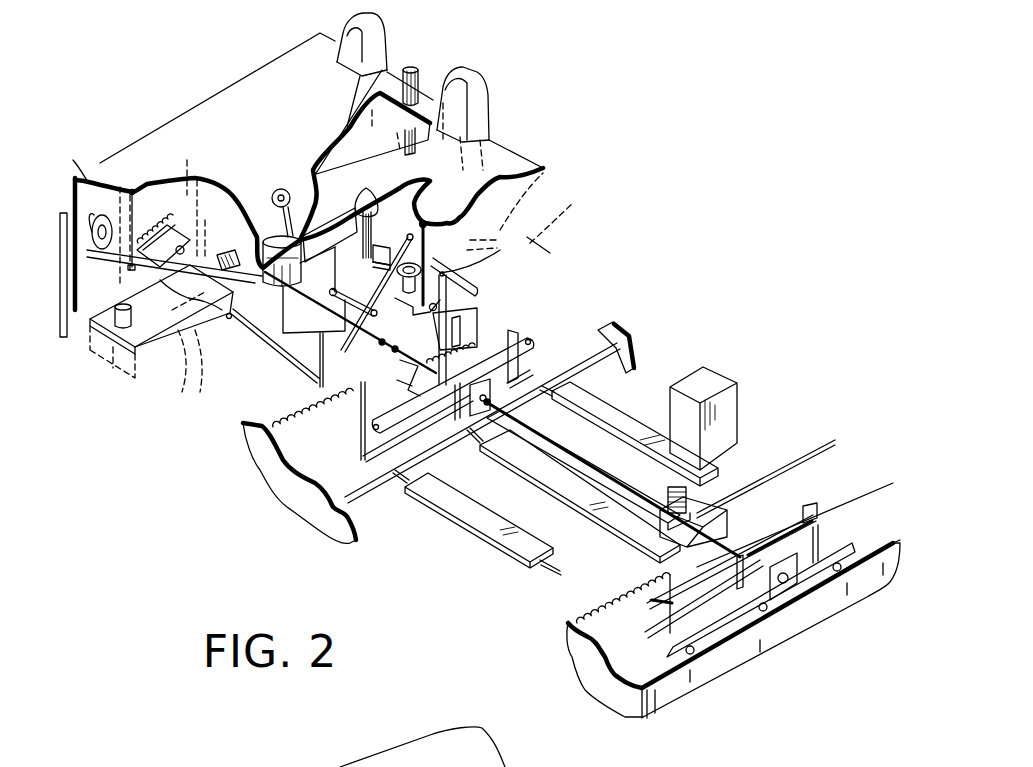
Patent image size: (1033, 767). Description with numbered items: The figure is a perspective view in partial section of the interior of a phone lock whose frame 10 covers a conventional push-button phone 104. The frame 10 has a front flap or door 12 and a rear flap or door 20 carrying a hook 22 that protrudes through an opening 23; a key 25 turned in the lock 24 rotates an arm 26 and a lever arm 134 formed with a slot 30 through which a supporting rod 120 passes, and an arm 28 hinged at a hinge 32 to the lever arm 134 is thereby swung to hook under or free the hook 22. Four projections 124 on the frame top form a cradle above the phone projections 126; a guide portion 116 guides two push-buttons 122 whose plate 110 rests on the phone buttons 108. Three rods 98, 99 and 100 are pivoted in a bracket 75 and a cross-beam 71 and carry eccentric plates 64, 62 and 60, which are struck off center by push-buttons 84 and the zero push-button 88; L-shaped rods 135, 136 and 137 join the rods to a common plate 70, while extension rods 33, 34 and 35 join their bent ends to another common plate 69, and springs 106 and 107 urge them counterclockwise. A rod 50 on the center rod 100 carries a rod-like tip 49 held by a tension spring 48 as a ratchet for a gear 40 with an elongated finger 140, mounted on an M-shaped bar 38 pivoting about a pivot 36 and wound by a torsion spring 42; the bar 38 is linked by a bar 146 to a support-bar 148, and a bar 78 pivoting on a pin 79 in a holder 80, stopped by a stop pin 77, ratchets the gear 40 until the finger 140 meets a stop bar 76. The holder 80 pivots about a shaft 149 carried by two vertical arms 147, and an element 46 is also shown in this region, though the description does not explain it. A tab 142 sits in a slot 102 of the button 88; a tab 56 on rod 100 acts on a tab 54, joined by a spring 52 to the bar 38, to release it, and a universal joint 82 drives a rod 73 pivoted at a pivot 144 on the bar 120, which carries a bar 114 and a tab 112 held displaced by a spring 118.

The frame 10 is at (218, 95).
The front flap or door 12 is at (582, 450).
The rear flap or door 20 is at (60, 237).
The hook 22 is at (118, 185).
The opening 23 is at (65, 161).
The lock 24 is at (275, 238).
The key 25 is at (281, 190).
The arm 26 is at (283, 310).
The arm 28 is at (90, 258).
The slot 30 is at (130, 290).
The hinge 32 is at (229, 320).
The extension rod 33 is at (365, 403).
The extension rod 34 is at (493, 393).
The extension rod 35 is at (519, 335).
The pivot 36 is at (368, 312).
The M-shaped bar 38 is at (430, 200).
The gear 40 is at (446, 262).
The torsion spring 42 is at (397, 296).
The rod 46 is at (448, 305).
The tension spring 48 is at (428, 310).
The rod-like tip 49 is at (500, 246).
The rod 50 is at (457, 331).
The spring 52 is at (476, 350).
The tab 54 is at (408, 368).
The tab 56 is at (391, 387).
The plate 60 is at (540, 475).
The plate 62 is at (600, 408).
The plate 64 is at (460, 513).
The common plate 69 is at (536, 340).
The common plate 70 is at (813, 510).
The cross-beam 71 is at (367, 490).
The rod 73 is at (272, 292).
The bracket 75 is at (850, 548).
The stop bar 76 is at (428, 242).
The stop pin 77 is at (377, 286).
The bar 78 is at (372, 268).
The shaft or pin 79 is at (72, 200).
The holder 80 is at (342, 228).
The universal joint 82 is at (378, 351).
The push-button 84 is at (730, 380).
The push-button 88 is at (665, 486).
The rod 98 is at (362, 462).
The rod 99 is at (522, 378).
The rod 100 is at (455, 405).
The slot 102 is at (730, 508).
The push-button phone 104 is at (562, 224).
The spring 106 is at (305, 423).
The spring 107 is at (590, 612).
The push-button 108 is at (125, 368).
The plate 110 is at (200, 330).
The tab 112 is at (233, 200).
The bar 114 is at (197, 180).
The guide portion 116 is at (403, 150).
The spring 118 is at (190, 200).
The supporting rod 120 is at (152, 190).
The push-button 122 is at (412, 66).
The projection 124 is at (357, 33).
The projection 126 is at (505, 148).
The lever arm 134 is at (310, 382).
The L-shaped rod 135 is at (672, 612).
The L-shaped rod 136 is at (770, 605).
The L-shaped rod 137 is at (820, 525).
The elongated finger 140 is at (540, 186).
The tab 142 is at (652, 530).
The pivot 144 is at (188, 236).
The bar 146 is at (329, 293).
The vertical arm 147 is at (374, 190).
The vertical support-bar 148 is at (298, 266).
The horizontal shaft 149 is at (373, 232).